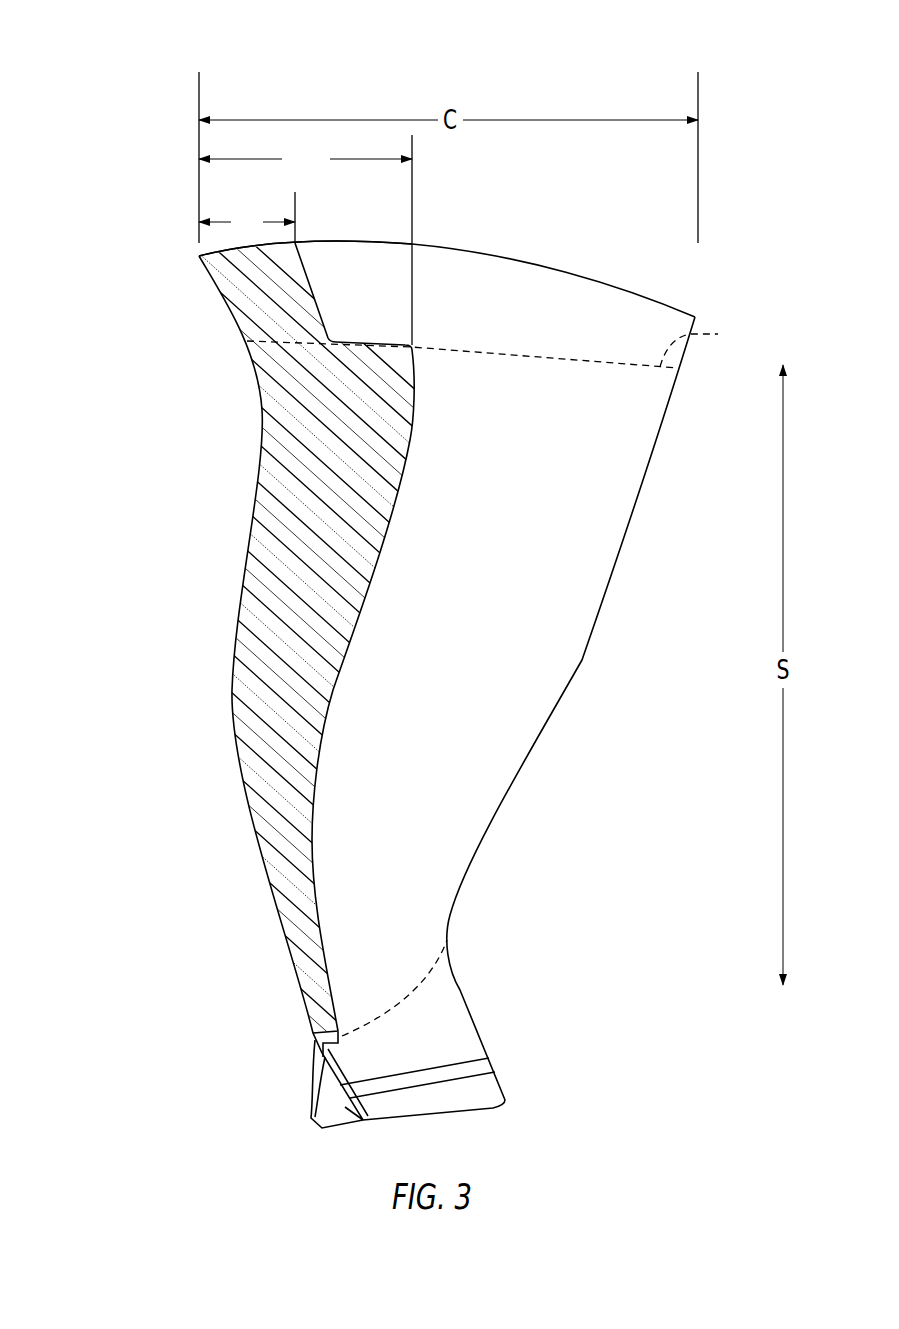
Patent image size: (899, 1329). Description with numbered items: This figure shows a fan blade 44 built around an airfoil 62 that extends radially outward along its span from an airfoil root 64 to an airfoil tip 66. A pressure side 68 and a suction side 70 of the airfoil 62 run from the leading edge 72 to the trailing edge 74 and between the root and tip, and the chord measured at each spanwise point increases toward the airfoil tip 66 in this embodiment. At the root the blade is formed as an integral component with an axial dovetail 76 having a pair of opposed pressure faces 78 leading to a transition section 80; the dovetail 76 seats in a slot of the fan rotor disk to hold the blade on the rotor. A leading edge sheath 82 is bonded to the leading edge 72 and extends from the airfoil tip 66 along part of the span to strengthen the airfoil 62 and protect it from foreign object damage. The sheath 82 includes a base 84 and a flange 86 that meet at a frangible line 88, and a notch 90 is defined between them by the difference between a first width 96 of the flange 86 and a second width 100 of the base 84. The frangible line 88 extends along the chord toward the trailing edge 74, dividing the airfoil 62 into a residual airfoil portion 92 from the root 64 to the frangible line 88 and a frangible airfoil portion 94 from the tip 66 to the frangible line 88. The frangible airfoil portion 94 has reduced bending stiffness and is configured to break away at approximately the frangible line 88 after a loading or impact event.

The fan blade 44 is at (88, 108).
The airfoil 62 is at (283, 818).
The airfoil root 64 is at (405, 997).
The airfoil tip 66 is at (465, 245).
The pressure side 68 is at (415, 562).
The suction side 70 is at (323, 597).
The leading edge 72 is at (230, 723).
The trailing edge 74 is at (598, 615).
The axial dovetail 76 is at (342, 1118).
The pressure faces 78 is at (316, 1086).
The transition section 80 is at (433, 1027).
The leading edge sheath 82 is at (275, 516).
The base 84 is at (287, 455).
The flange 86 is at (255, 296).
The frangible line 88 is at (497, 343).
The notch 90 is at (376, 230).
The residual airfoil portion 92 is at (692, 476).
The frangible airfoil portion 94 is at (722, 301).
The first width 96 is at (247, 217).
The second width 100 is at (305, 240).